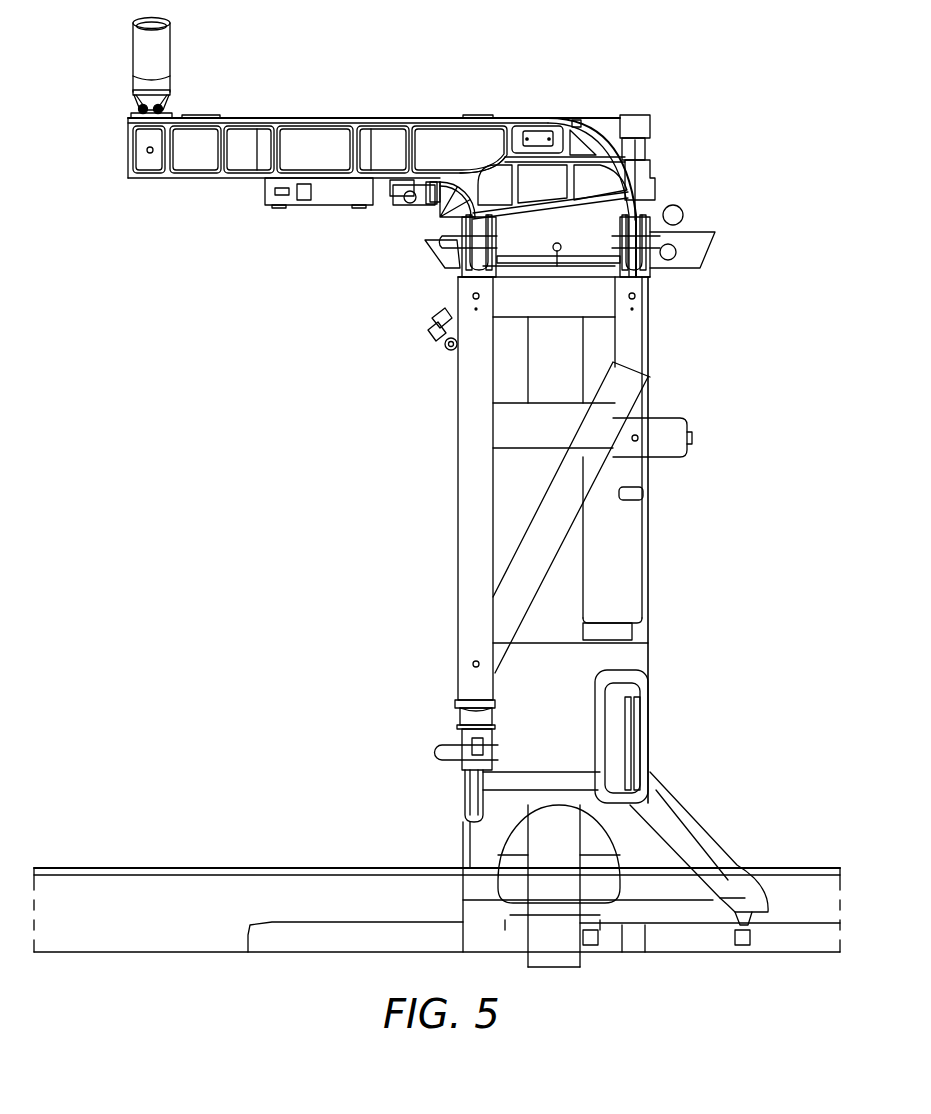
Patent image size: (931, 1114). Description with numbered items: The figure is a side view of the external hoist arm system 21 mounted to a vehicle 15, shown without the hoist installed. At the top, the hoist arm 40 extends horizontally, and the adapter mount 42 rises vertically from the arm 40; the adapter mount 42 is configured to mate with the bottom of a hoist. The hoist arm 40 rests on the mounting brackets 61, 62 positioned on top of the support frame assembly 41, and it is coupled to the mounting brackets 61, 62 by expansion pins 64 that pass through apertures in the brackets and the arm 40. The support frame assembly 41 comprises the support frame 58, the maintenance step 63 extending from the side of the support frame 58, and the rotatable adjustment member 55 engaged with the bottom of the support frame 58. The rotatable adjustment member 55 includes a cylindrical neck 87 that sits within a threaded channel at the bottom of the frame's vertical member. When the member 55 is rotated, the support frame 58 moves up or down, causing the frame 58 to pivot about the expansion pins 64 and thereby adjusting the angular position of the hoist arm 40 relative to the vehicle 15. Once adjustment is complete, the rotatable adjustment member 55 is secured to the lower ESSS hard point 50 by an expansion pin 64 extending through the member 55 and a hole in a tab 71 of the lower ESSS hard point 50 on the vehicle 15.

The vehicle 15 is at (160, 895).
The external hoist arm system 21 is at (468, 88).
The hoist arm 40 is at (297, 140).
The support frame assembly 41 is at (456, 397).
The adapter mount 42 is at (160, 38).
The lower ESSS hard point 50 is at (474, 796).
The rotatable adjustment member 55 is at (453, 722).
The support frame 58 is at (477, 443).
The mounting bracket 61 is at (460, 277).
The mounting bracket 62 is at (650, 273).
The maintenance step 63 is at (680, 437).
The expansion pin 64 is at (440, 245).
The tab 71 is at (478, 782).
The cylindrical neck 87 is at (494, 715).